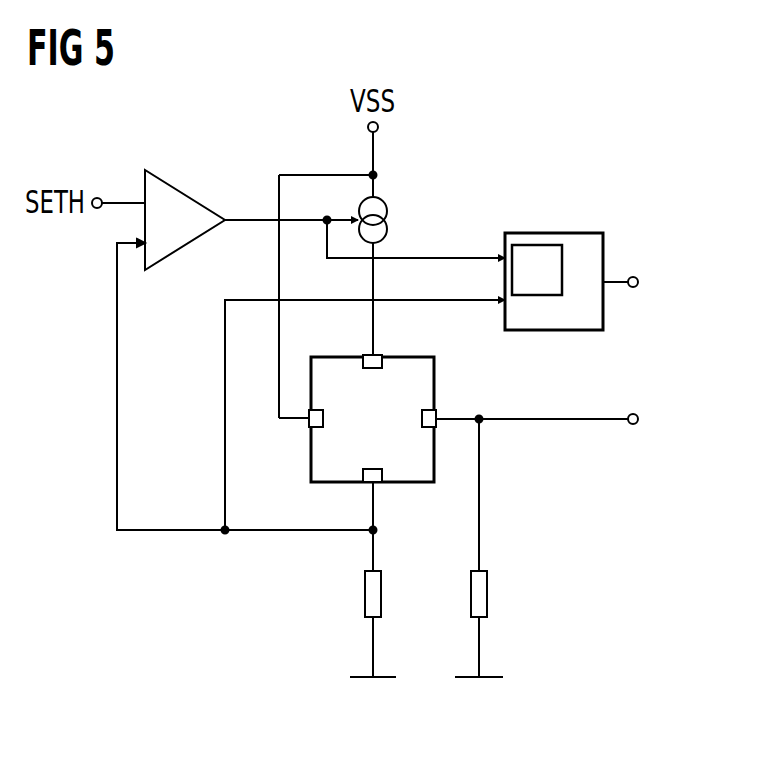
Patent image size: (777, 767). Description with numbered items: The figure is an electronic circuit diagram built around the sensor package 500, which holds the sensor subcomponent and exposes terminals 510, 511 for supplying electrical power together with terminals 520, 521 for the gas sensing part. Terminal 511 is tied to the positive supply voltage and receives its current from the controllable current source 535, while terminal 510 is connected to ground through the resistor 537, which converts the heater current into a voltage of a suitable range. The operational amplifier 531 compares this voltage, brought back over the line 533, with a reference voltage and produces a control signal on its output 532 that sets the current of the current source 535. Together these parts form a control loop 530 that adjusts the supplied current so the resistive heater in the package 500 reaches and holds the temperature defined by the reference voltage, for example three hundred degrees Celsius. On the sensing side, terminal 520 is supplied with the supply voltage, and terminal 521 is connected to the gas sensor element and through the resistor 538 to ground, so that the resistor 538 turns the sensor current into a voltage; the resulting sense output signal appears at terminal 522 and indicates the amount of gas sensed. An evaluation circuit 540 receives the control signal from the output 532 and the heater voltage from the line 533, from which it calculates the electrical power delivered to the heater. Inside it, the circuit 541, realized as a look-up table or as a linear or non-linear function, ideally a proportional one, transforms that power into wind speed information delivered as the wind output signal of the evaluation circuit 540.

The package 500 is at (311, 472).
The terminal 510 is at (384, 482).
The terminal 511 is at (382, 360).
The terminal 520 is at (310, 424).
The terminal 521 is at (437, 415).
The terminal 522 is at (592, 422).
The control loop 530 is at (85, 375).
The operational amplifier 531 is at (190, 196).
The output 532 is at (247, 225).
The line 533 is at (177, 534).
The controllable current source 535 is at (388, 228).
The resistor 537 is at (364, 591).
The resistor 538 is at (487, 591).
The evaluation circuit 540 is at (580, 233).
The circuit 541 is at (520, 245).